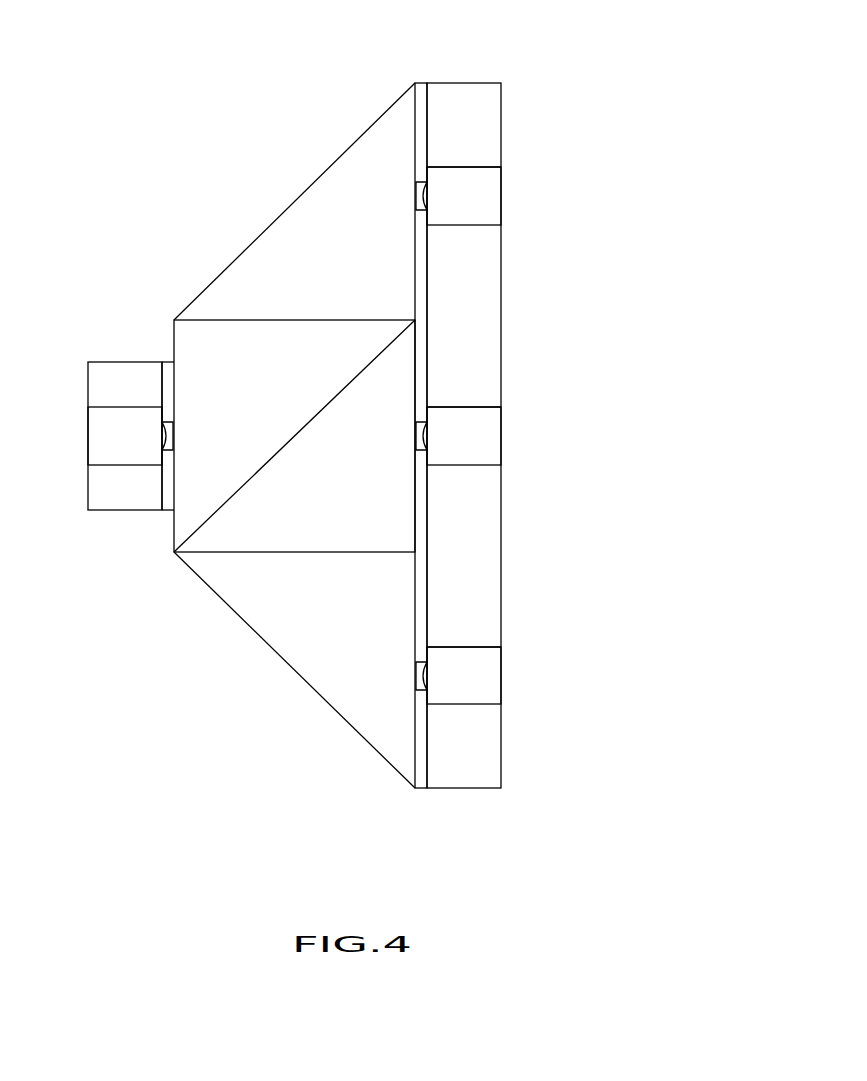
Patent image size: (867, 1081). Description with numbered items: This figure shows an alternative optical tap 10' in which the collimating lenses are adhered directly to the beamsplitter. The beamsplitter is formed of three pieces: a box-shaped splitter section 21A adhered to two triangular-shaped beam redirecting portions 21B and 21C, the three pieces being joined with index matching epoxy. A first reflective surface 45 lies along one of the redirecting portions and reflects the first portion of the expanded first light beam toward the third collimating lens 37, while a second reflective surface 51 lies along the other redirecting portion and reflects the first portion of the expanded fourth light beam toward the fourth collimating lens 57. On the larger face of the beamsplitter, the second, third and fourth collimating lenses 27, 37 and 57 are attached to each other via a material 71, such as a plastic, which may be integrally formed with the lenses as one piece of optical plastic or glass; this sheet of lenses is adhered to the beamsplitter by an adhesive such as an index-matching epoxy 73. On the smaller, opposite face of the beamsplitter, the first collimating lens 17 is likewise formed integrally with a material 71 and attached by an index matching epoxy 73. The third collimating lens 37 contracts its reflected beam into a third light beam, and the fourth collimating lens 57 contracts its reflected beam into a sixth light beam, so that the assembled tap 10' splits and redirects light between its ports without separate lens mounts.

The alternative optical tap 10' is at (252, 301).
The first collimating lens 17 is at (108, 437).
The splitter section 21A is at (255, 559).
The beam redirecting portion 21B is at (305, 619).
The beam redirecting portion 21C is at (300, 267).
The second collimating lens 27 is at (483, 443).
The third collimating lens 37 is at (483, 193).
The first reflective surface 45 is at (292, 204).
The second reflective surface 51 is at (334, 696).
The fourth collimating lens 57 is at (483, 671).
The material 71 is at (105, 378).
The index-matching epoxy 73 is at (422, 88).